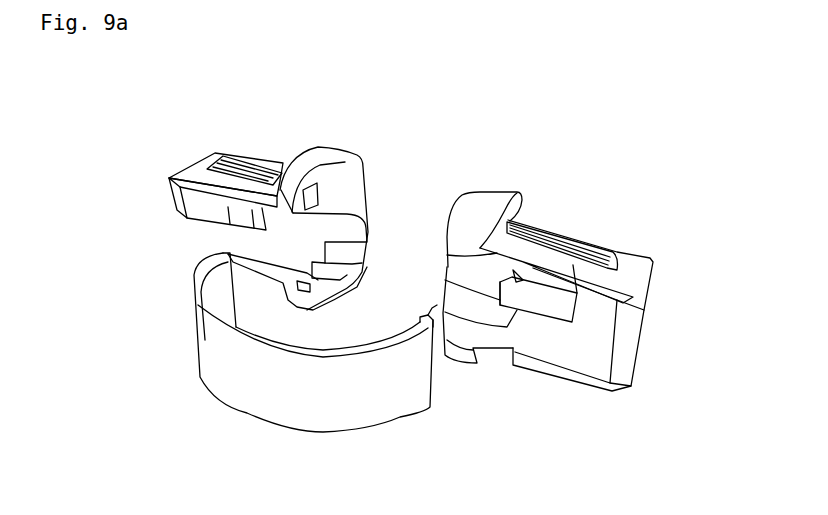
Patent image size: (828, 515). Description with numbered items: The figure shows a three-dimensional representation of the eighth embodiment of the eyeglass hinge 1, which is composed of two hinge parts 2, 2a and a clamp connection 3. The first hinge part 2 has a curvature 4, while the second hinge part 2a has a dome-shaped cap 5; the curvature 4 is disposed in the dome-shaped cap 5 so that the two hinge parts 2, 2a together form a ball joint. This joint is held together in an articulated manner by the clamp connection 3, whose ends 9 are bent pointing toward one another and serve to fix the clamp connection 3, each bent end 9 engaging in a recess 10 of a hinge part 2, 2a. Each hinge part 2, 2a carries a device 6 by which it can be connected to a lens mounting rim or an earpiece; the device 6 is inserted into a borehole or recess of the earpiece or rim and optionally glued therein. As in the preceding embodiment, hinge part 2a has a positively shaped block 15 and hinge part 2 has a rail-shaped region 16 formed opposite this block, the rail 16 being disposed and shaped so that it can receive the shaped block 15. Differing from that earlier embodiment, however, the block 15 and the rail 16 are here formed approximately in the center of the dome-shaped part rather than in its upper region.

The eyeglass hinge 1 is at (105, 98).
The hinge part 2 is at (592, 350).
The hinge part 2a is at (228, 256).
The clamp connection 3 is at (303, 393).
The curvature 4 is at (479, 204).
The dome-shaped cap 5 is at (318, 157).
The device 6 is at (232, 165).
The ends 9 is at (213, 292).
The recess 10 is at (240, 211).
The positively shaped block 15 is at (357, 223).
The rail-shaped region 16 is at (463, 285).